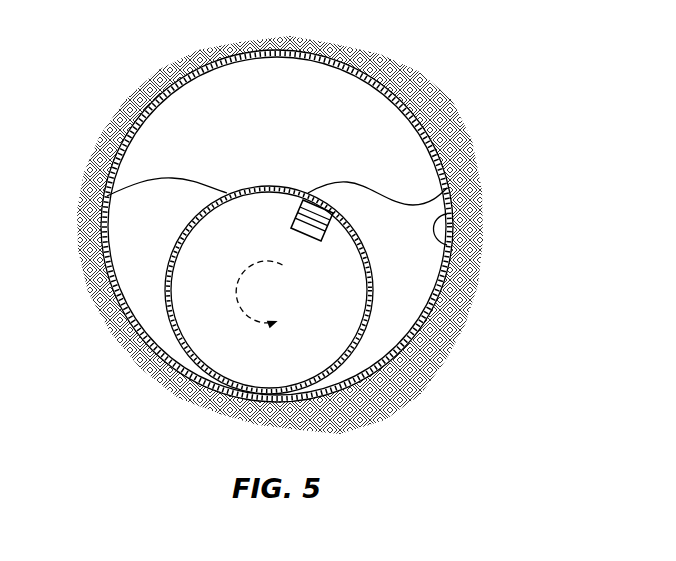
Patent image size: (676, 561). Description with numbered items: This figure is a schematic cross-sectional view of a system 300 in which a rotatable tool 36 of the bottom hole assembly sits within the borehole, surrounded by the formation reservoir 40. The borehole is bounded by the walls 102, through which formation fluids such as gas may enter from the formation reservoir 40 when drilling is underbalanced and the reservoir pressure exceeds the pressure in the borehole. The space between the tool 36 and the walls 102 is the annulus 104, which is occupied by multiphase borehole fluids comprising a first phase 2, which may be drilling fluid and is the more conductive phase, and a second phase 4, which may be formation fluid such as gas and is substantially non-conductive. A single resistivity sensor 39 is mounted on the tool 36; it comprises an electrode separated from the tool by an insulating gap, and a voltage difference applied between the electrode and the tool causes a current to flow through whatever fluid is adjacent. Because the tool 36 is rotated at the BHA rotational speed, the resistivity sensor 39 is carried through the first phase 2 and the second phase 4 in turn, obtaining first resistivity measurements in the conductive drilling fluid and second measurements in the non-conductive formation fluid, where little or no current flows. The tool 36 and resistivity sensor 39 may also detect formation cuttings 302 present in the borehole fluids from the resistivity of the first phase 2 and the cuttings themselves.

The first phase 2 is at (412, 283).
The second phase 4 is at (368, 135).
The tool 36 is at (336, 314).
The resistivity sensor 39 is at (316, 205).
The formation reservoir 40 is at (113, 119).
The walls of the borehole 102 is at (448, 216).
The annulus 104 is at (233, 98).
The system 300 is at (340, 206).
The formation cuttings 302 is at (358, 355).